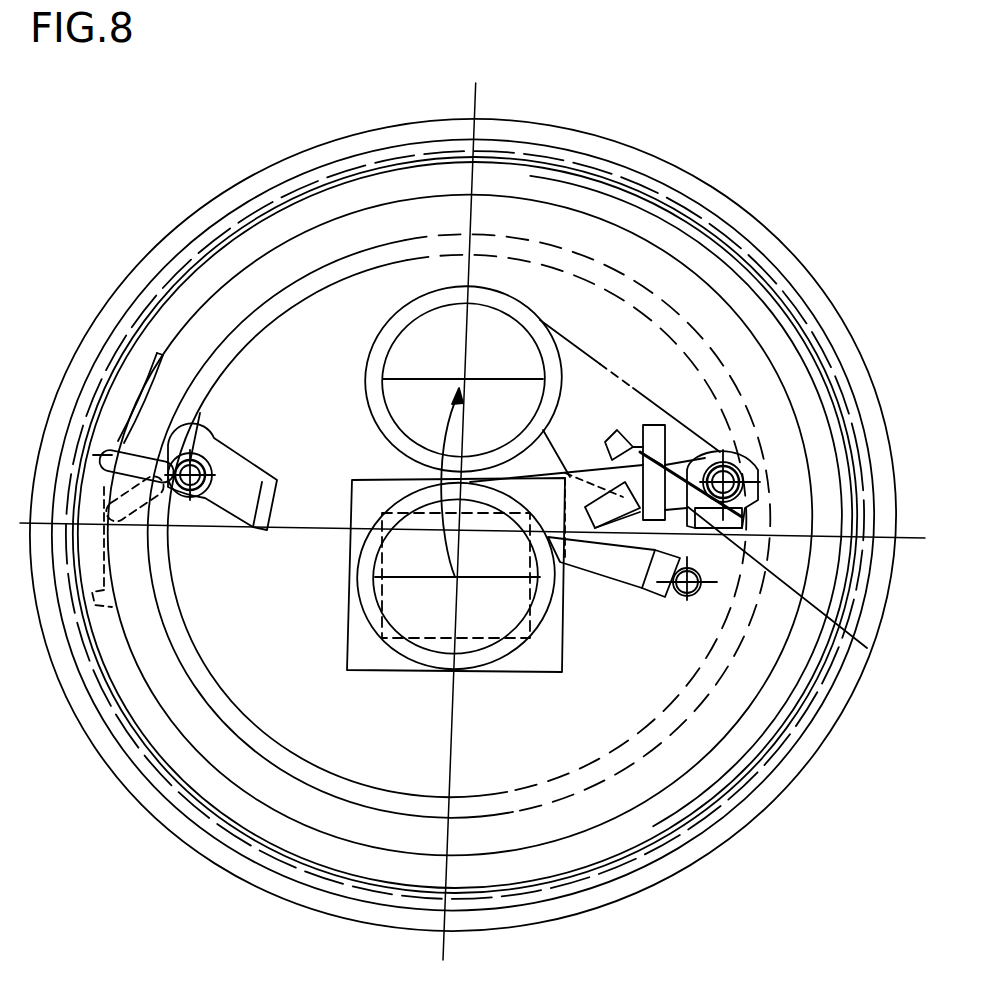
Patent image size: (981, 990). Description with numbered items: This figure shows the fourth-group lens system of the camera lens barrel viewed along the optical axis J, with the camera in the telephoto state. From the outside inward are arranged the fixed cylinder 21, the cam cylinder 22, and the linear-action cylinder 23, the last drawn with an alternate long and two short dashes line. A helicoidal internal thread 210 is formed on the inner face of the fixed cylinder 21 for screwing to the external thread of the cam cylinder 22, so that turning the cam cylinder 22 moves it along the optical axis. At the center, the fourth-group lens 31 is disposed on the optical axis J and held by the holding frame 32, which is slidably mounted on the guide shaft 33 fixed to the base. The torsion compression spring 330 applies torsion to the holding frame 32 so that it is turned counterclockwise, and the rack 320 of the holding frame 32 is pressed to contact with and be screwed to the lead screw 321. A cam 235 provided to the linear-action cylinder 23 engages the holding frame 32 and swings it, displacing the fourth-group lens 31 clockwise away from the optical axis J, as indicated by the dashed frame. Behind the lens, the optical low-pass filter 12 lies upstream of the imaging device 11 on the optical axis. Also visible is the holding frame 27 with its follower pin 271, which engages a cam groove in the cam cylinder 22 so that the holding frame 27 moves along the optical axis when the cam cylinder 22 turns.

The helicoidal internal thread 210 is at (372, 158).
The fixed cylinder 21 is at (300, 158).
The cam cylinder 22 is at (240, 247).
The linear-action cylinder 23 is at (582, 250).
The cam 235 is at (655, 427).
The holding frame 27 is at (233, 512).
The follower pin 271 is at (168, 445).
The fourth-group lens 31 is at (402, 398).
The holding frame 32 is at (360, 369).
The guide shaft 33 is at (747, 443).
The rack 320 is at (672, 598).
The lead screw 321 is at (687, 597).
The torsion compression spring 330 is at (867, 648).
The optical low-pass filter 12 is at (345, 648).
The imaging device 11 is at (440, 640).
The optical axis J is at (455, 577).